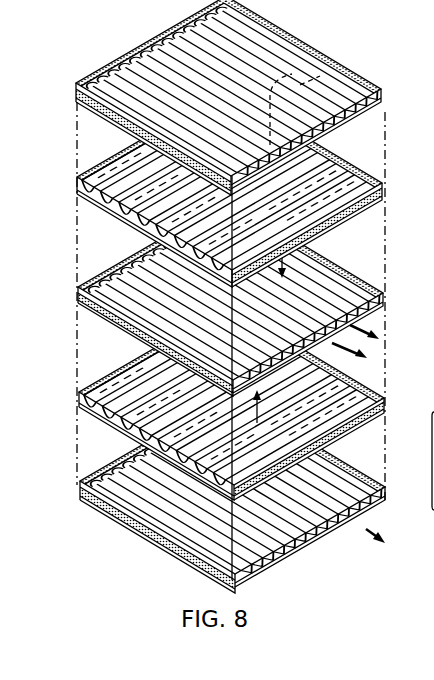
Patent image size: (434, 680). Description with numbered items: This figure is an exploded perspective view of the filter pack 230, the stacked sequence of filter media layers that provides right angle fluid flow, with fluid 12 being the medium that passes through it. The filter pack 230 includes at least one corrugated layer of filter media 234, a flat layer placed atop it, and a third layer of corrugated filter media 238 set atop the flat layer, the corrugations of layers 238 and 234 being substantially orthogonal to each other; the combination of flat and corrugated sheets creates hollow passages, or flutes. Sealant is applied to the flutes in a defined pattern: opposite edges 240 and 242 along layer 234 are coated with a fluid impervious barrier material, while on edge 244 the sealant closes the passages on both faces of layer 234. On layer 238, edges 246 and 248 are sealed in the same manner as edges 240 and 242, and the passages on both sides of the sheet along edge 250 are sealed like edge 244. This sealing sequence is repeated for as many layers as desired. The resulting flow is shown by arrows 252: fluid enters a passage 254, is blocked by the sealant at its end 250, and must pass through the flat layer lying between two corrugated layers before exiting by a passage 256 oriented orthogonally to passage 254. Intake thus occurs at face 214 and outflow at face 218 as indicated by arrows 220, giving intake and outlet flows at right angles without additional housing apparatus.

The filter pack 230 is at (255, 295).
The first fluid 12 is at (427, 37).
The passage 256 is at (373, 108).
The arrows 252 is at (96, 196).
The passage 254 is at (96, 198).
The third layer of corrugated filter media 238 is at (121, 386).
The edge 248 is at (96, 383).
The edge 250 is at (364, 383).
The edge 246 is at (381, 407).
The edge 244 is at (108, 474).
The edge 242 is at (355, 472).
The edge 240 is at (99, 504).
The face 214 is at (124, 530).
The corrugated layer of filter media 234 is at (272, 553).
The face 218 is at (335, 527).
The arrows 220 is at (368, 521).